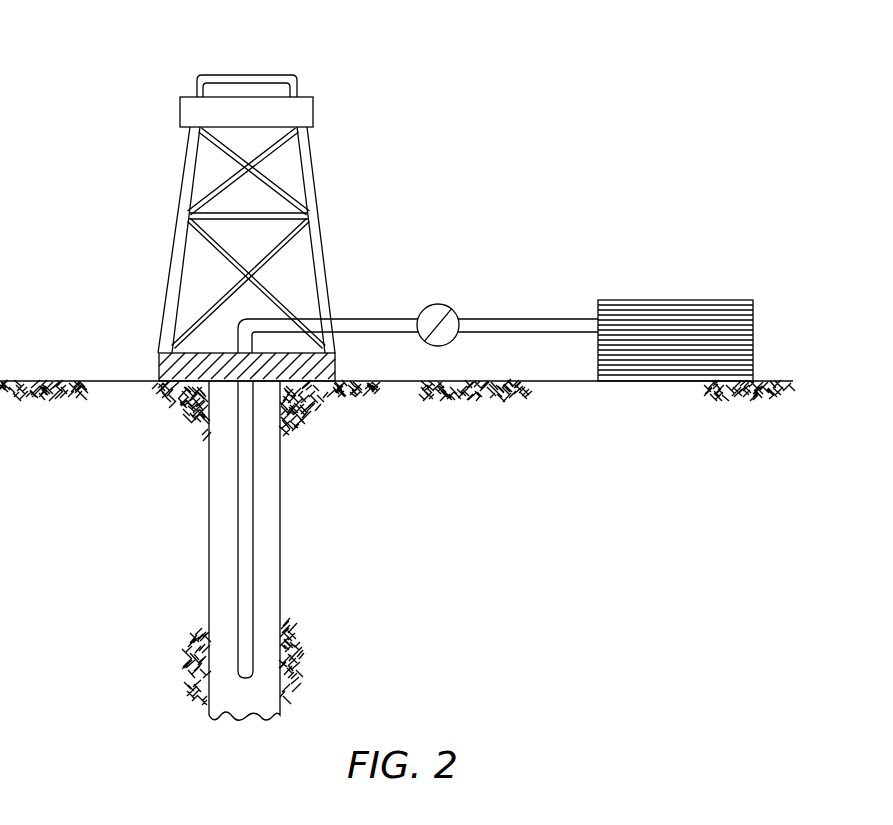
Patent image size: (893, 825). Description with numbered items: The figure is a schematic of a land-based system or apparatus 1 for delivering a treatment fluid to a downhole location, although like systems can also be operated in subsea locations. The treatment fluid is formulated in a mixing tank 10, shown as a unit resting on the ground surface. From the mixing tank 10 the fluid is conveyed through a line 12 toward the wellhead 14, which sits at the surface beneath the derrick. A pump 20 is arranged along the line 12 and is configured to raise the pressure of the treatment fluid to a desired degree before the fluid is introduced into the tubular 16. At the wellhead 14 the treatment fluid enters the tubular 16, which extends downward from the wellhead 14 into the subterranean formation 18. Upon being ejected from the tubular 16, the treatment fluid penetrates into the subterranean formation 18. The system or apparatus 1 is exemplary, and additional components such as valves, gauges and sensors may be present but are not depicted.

The system or apparatus 1 is at (120, 61).
The mixing tank 10 is at (673, 300).
The line 12 is at (365, 319).
The wellhead 14 is at (158, 370).
The tubular 16 is at (253, 480).
The subterranean formation 18 is at (61, 553).
The pump 20 is at (450, 306).